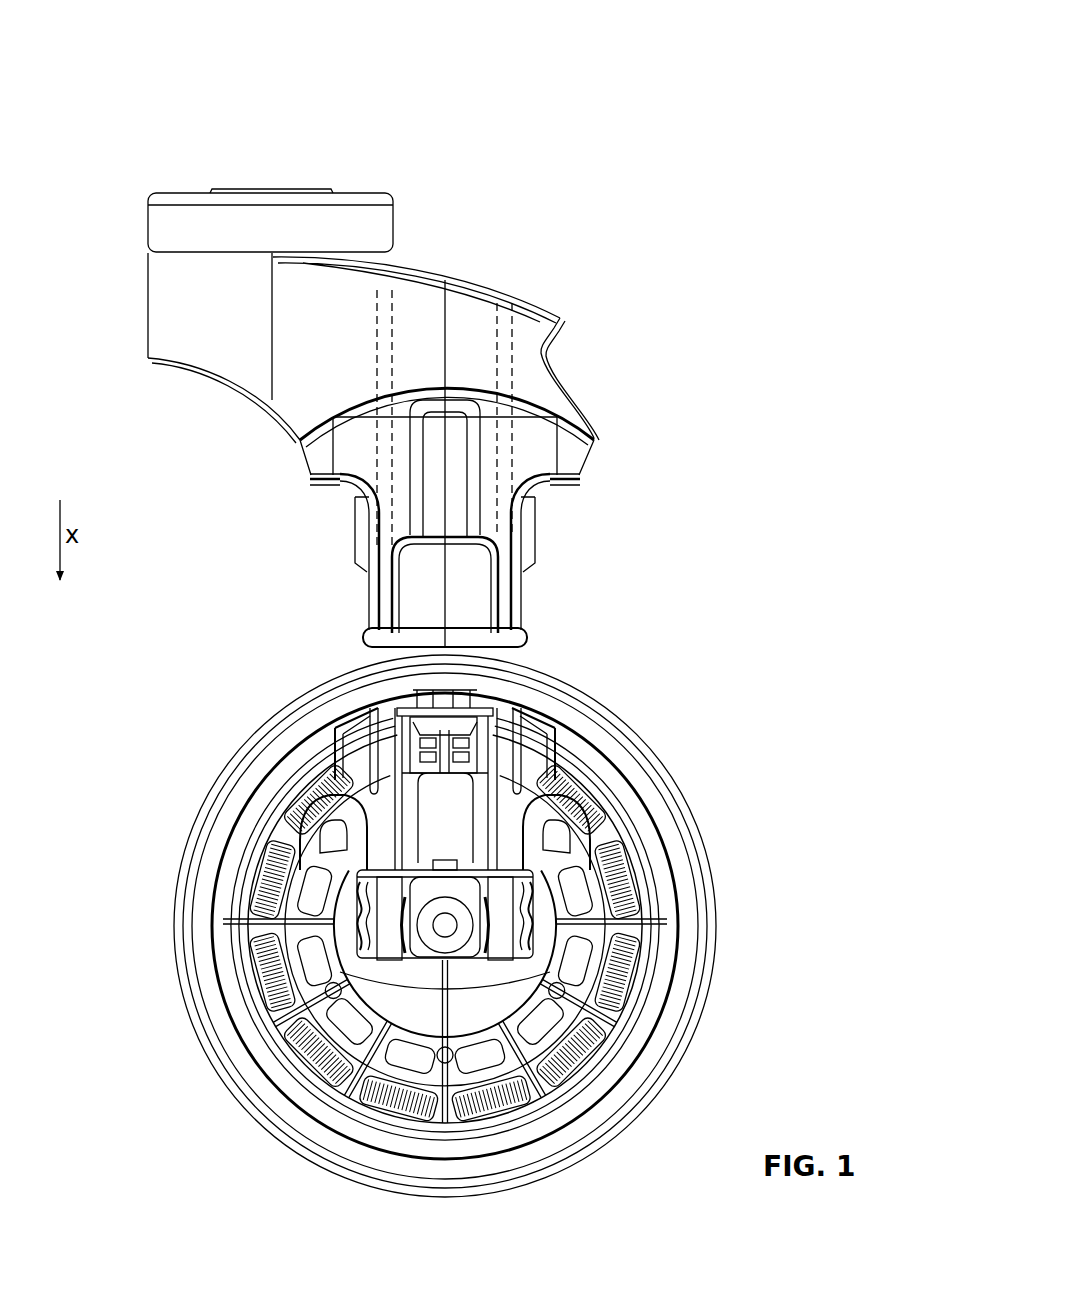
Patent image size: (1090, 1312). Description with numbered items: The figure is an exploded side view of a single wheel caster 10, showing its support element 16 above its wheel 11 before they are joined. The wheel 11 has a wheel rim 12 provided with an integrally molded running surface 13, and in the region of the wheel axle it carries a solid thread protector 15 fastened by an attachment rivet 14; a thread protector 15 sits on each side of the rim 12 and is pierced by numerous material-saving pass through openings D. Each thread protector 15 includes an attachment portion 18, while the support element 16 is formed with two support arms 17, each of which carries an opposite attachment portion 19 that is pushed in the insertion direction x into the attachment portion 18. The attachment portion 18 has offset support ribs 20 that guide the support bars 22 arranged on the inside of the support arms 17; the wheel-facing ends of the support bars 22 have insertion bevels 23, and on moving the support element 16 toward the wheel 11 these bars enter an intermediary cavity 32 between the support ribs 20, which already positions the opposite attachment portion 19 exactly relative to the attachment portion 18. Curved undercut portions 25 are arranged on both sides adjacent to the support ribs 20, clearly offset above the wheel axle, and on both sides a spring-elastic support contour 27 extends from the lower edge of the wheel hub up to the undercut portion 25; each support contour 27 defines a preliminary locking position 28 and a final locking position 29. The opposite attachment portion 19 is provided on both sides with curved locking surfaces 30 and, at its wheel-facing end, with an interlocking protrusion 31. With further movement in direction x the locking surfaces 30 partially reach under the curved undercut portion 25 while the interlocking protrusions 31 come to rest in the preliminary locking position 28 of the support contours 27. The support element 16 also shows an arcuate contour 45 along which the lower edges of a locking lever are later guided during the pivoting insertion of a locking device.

The single wheel caster 10 is at (645, 152).
The wheel 11 is at (700, 728).
The wheel rim 12 is at (623, 1058).
The running surface 13 is at (705, 830).
The attachment rivet 14 is at (590, 1060).
The thread protector 15 is at (590, 890).
The support element 16 is at (463, 253).
The support arm 17 is at (602, 463).
The attachment portion 18 is at (377, 827).
The opposite attachment portion 19 is at (440, 485).
The support rib 20 is at (397, 710).
The support bar 22 is at (508, 455).
The insertion bevel 23 is at (360, 625).
The curved undercut portion 25 is at (327, 803).
The support contour 27 is at (365, 950).
The preliminary locking position 28 is at (352, 918).
The final locking position 29 is at (300, 985).
The curved locking surface 30 is at (358, 532).
The interlocking protrusion 31 is at (360, 635).
The intermediary cavity 32 is at (372, 740).
The arcuate contour 45 is at (553, 380).
The pass through opening D is at (333, 1023).